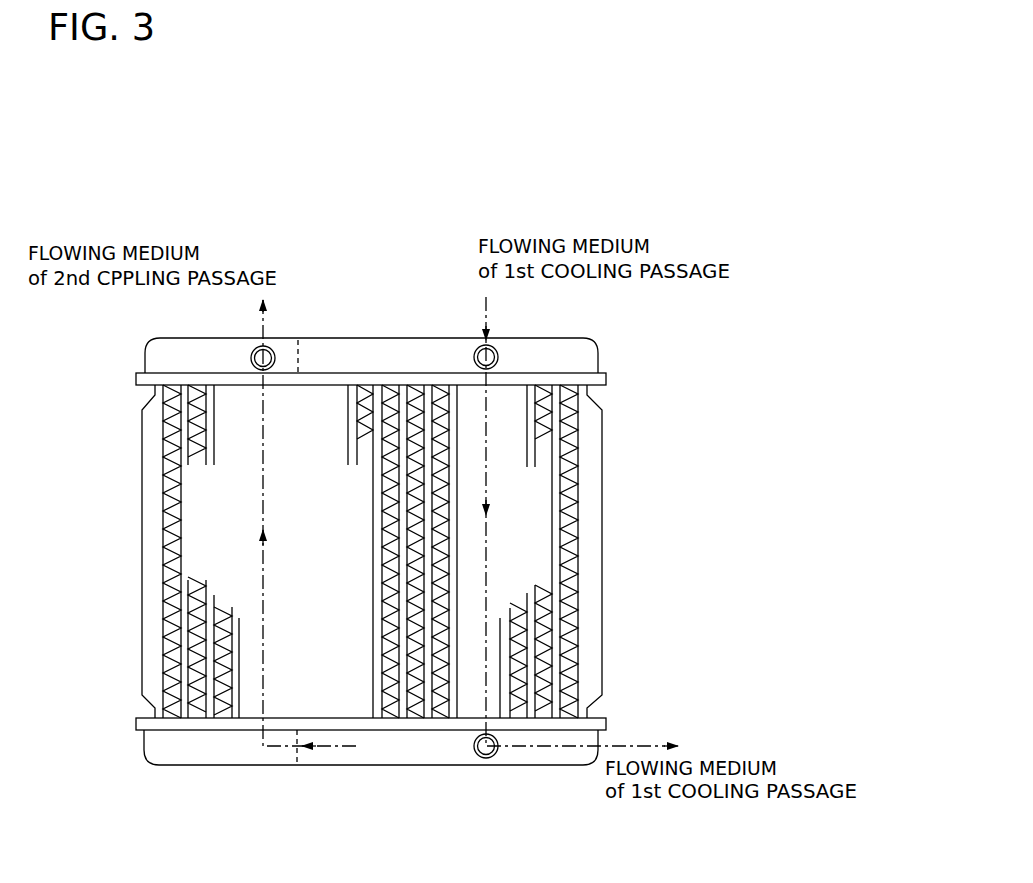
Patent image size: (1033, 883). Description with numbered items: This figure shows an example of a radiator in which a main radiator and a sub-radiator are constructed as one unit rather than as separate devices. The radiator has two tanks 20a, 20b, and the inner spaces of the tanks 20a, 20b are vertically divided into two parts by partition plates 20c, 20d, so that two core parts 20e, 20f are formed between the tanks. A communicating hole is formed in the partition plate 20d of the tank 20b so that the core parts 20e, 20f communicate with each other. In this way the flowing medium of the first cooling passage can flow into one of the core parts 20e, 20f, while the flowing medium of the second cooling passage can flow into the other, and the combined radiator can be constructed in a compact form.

The tank 20a is at (370, 338).
The tank 20b is at (368, 765).
The partition plate 20c is at (299, 357).
The partition plate 20d is at (297, 755).
The core part 20e is at (536, 529).
The core part 20f is at (206, 530).